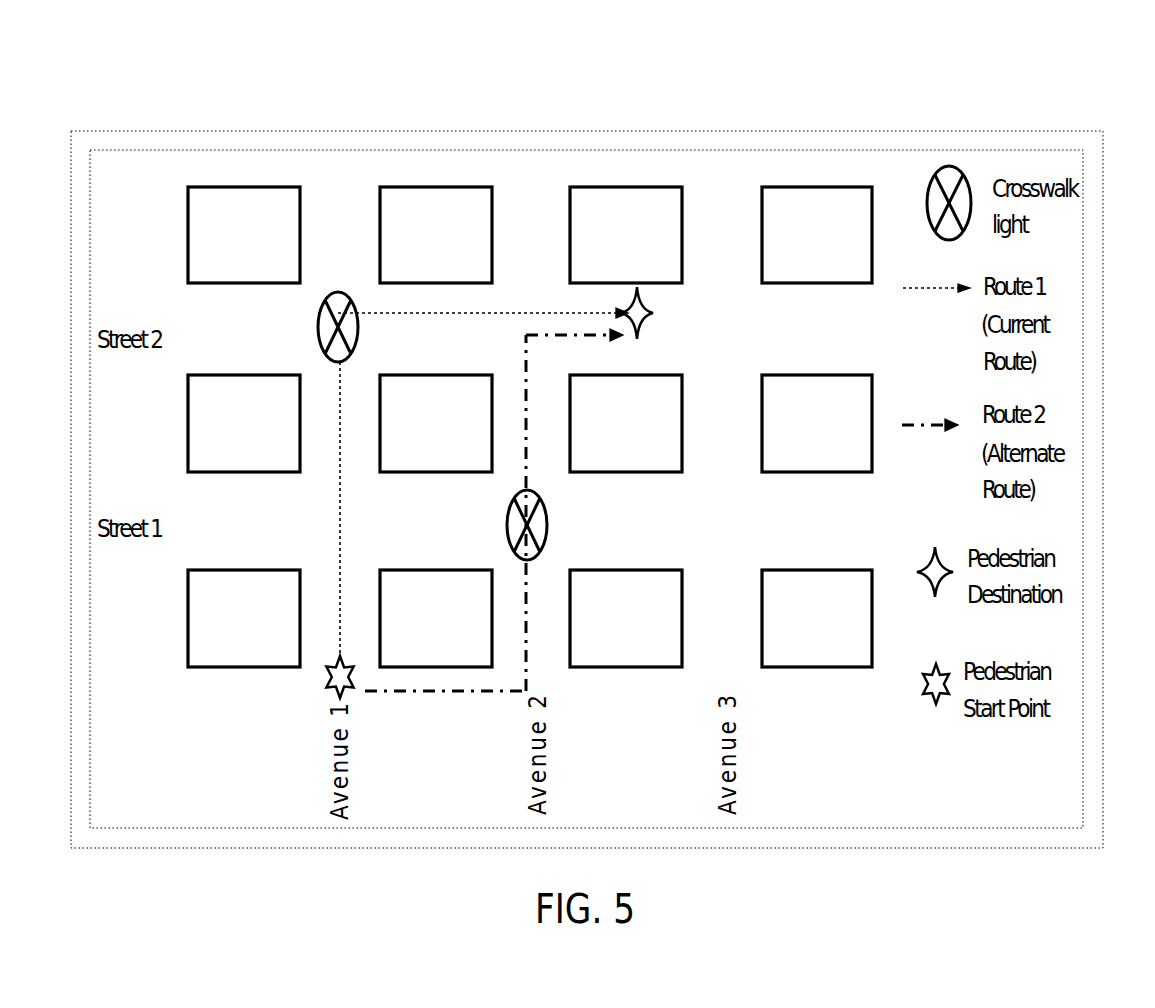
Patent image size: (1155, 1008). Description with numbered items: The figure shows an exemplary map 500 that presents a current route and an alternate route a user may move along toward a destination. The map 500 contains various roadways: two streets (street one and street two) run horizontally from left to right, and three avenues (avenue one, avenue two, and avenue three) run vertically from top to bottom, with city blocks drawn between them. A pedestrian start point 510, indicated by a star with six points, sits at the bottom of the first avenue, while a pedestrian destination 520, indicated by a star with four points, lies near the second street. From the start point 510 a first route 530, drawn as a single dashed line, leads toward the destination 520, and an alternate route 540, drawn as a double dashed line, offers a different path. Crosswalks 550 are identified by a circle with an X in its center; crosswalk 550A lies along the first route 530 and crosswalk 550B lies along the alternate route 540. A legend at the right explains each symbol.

The map 500 is at (857, 92).
The pedestrian start point 510 is at (935, 670).
The pedestrian destination 520 is at (935, 556).
The first route 530 is at (936, 273).
The alternate route 540 is at (930, 409).
The crosswalks 550 is at (924, 203).
The crosswalk 550A is at (300, 327).
The crosswalk 550B is at (559, 525).